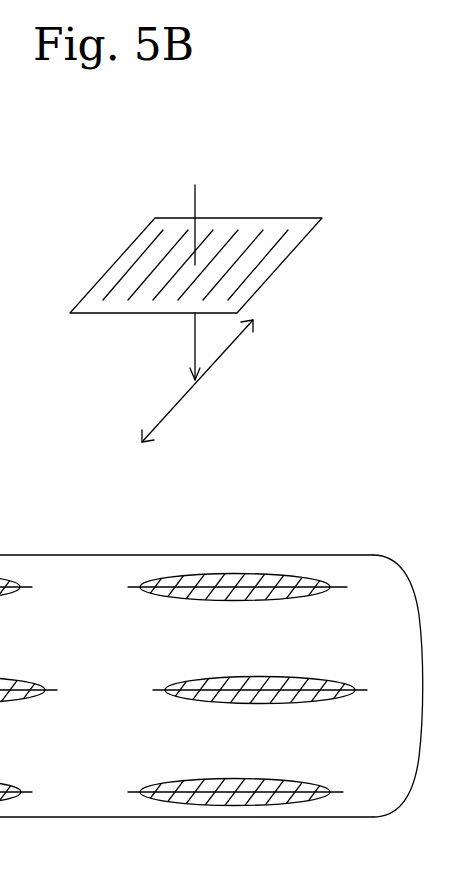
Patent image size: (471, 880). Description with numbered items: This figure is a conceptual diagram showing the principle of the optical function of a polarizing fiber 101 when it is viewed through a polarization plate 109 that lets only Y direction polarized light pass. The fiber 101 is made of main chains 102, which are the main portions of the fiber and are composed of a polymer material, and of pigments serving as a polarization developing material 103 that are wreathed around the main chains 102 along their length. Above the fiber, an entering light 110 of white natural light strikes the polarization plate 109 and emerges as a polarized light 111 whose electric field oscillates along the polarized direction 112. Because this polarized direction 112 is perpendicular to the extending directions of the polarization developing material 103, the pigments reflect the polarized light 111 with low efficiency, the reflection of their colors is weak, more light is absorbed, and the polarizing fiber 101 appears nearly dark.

The polarizing fiber 101 is at (292, 553).
The main chain 102 is at (338, 583).
The polarization developing material 103 is at (230, 572).
The polarization plate 109 is at (282, 265).
The entering light 110 is at (195, 202).
The polarized light 111 is at (195, 340).
The polarized direction 112 is at (212, 367).